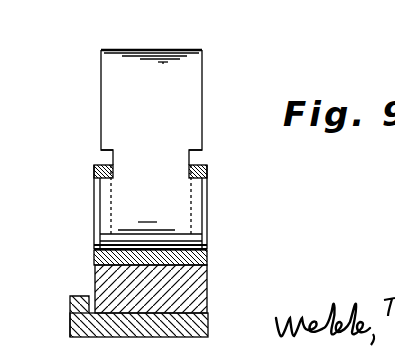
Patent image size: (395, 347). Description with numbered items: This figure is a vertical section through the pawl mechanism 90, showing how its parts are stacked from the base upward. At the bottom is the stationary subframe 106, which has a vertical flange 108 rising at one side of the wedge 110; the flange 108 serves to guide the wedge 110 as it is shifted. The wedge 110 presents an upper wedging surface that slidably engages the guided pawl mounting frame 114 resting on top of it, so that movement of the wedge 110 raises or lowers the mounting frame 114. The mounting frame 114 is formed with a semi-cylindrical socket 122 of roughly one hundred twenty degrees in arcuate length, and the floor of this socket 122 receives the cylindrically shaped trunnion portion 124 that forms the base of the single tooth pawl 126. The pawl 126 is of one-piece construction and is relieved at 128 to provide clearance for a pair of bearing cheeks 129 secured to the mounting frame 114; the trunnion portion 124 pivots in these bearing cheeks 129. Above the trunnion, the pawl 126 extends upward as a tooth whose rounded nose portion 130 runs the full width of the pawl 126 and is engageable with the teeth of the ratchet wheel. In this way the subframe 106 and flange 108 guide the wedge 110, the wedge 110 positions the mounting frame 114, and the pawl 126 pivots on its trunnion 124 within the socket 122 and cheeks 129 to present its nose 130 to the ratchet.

The pawl mechanism 90 is at (70, 322).
The stationary subframe 106 is at (208, 323).
The vertical flange 108 is at (70, 297).
The wedge 110 is at (207, 290).
The guided pawl mounting frame 114 is at (207, 253).
The semi-cylindrical socket 122 is at (94, 246).
The trunnion portion 124 is at (203, 200).
The single tooth pawl 126 is at (101, 80).
The relieved portion 128 is at (105, 151).
The bearing cheeks 129 is at (94, 171).
The rounded nose portion 130 is at (122, 49).